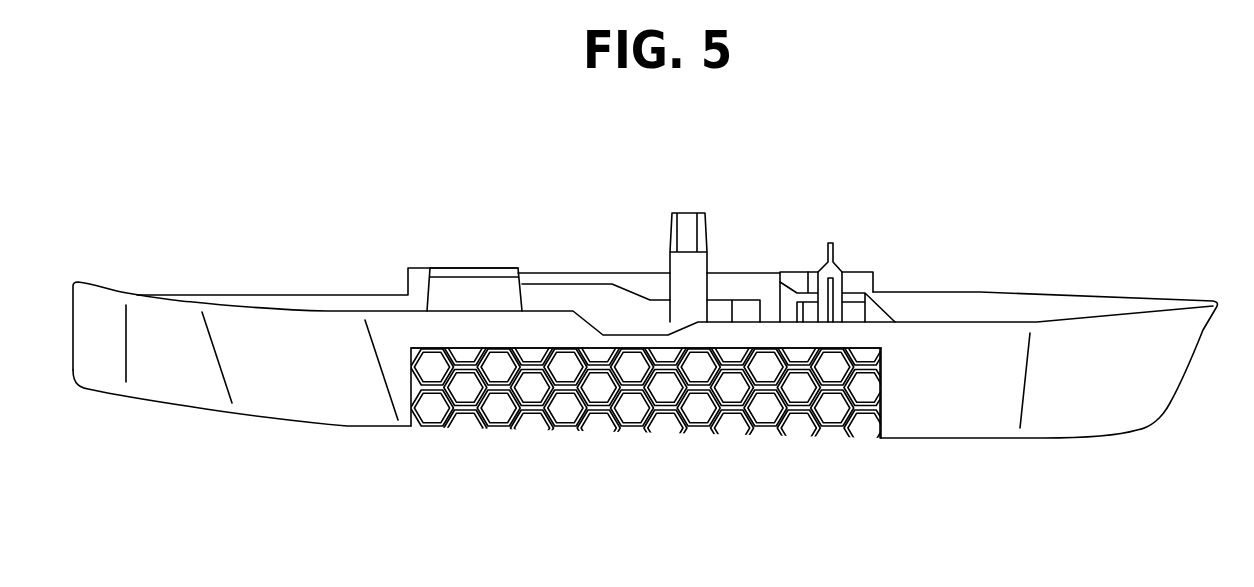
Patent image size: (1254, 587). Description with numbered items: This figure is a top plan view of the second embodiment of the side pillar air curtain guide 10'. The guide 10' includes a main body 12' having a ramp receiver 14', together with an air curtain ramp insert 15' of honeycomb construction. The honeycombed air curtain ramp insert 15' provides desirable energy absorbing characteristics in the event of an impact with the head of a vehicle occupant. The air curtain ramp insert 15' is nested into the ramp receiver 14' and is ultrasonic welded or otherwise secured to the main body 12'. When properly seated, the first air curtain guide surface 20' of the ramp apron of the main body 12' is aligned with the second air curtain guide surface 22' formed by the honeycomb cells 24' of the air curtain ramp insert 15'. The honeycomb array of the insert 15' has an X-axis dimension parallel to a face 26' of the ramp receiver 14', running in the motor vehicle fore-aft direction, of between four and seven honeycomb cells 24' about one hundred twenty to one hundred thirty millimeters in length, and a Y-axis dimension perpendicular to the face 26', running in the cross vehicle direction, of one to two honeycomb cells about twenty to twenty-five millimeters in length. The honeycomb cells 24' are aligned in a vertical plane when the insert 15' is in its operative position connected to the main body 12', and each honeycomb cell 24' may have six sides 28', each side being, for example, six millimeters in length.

The side pillar air curtain guide 10' is at (643, 277).
The main body 12' is at (814, 335).
The ramp receiver 14' is at (952, 418).
The air curtain ramp insert 15' is at (677, 440).
The first air curtain guide surface 20' is at (661, 251).
The second air curtain guide surface 22' is at (628, 446).
The honeycomb cells 24' is at (607, 451).
The face 26' is at (691, 295).
The sides 28' is at (686, 455).